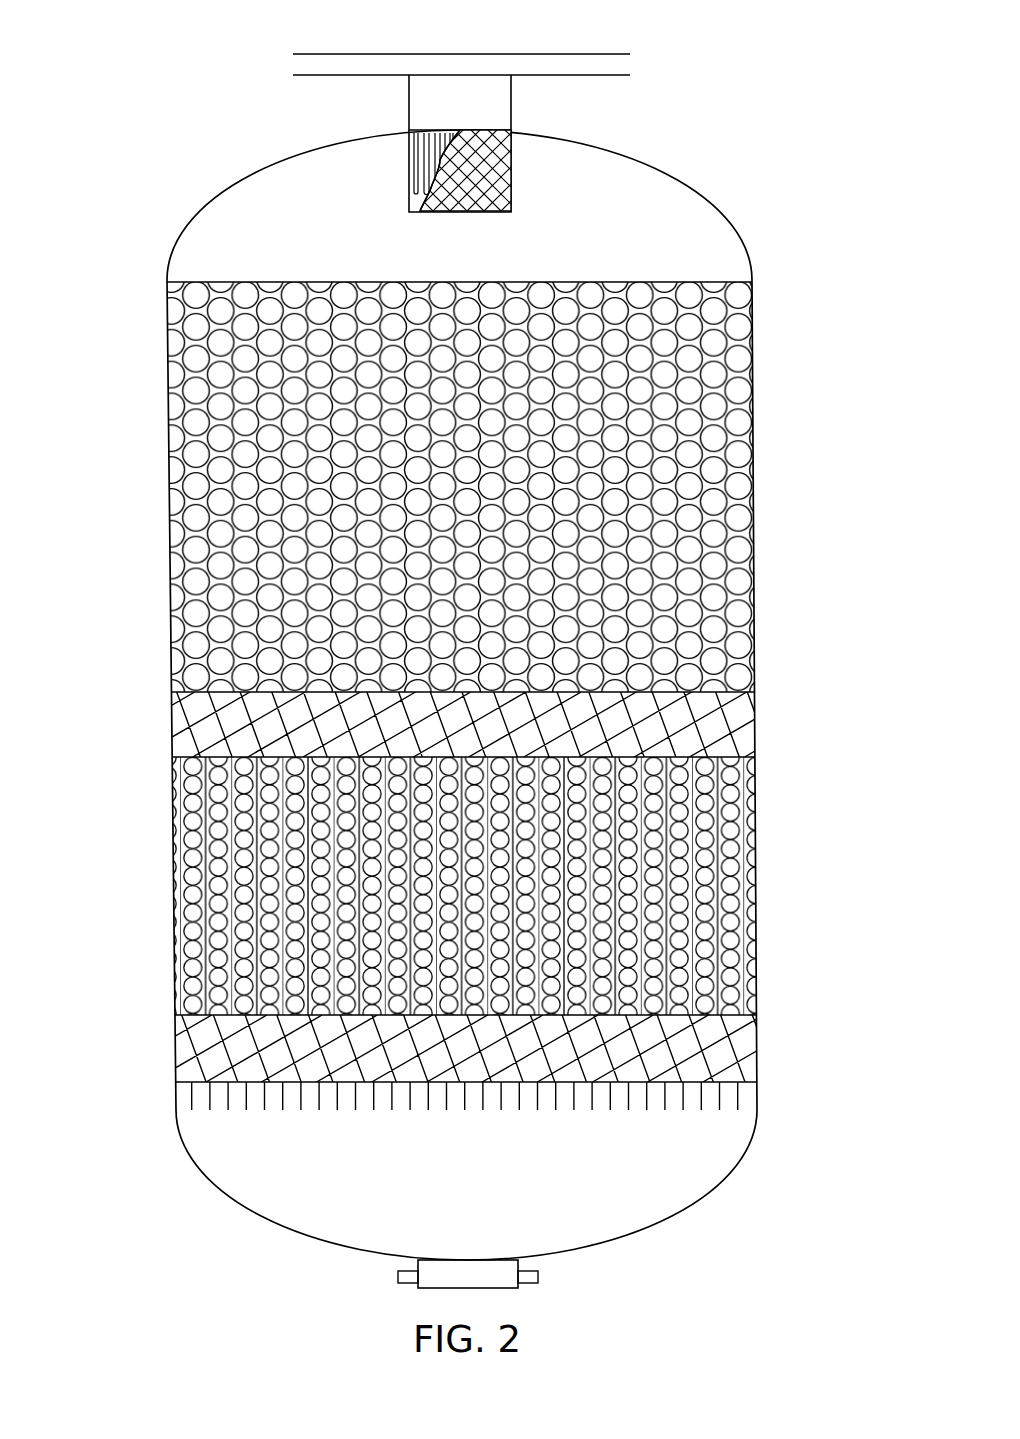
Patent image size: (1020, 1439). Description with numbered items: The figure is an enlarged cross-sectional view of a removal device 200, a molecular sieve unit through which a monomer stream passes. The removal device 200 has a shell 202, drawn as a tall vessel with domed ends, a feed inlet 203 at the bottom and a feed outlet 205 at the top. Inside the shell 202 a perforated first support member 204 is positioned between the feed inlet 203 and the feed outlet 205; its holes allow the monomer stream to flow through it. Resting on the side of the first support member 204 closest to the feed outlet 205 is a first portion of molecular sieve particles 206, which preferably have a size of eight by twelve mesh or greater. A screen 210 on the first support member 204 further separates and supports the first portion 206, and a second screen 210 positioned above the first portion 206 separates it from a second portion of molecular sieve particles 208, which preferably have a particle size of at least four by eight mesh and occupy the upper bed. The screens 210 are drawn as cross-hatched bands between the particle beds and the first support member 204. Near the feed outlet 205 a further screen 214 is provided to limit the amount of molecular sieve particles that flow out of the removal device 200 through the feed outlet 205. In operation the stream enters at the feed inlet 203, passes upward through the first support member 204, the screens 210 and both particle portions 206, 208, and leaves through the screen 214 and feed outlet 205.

The removal device 200 is at (766, 86).
The shell 202 is at (264, 165).
The feed inlet 203 is at (430, 1275).
The first support member 204 is at (176, 1097).
The feed outlet 205 is at (556, 53).
The first portion of molecular sieve particles 206 is at (722, 863).
The second portion of molecular sieve particles 208 is at (753, 570).
The screen 210 is at (208, 732).
The screen 214 is at (492, 183).